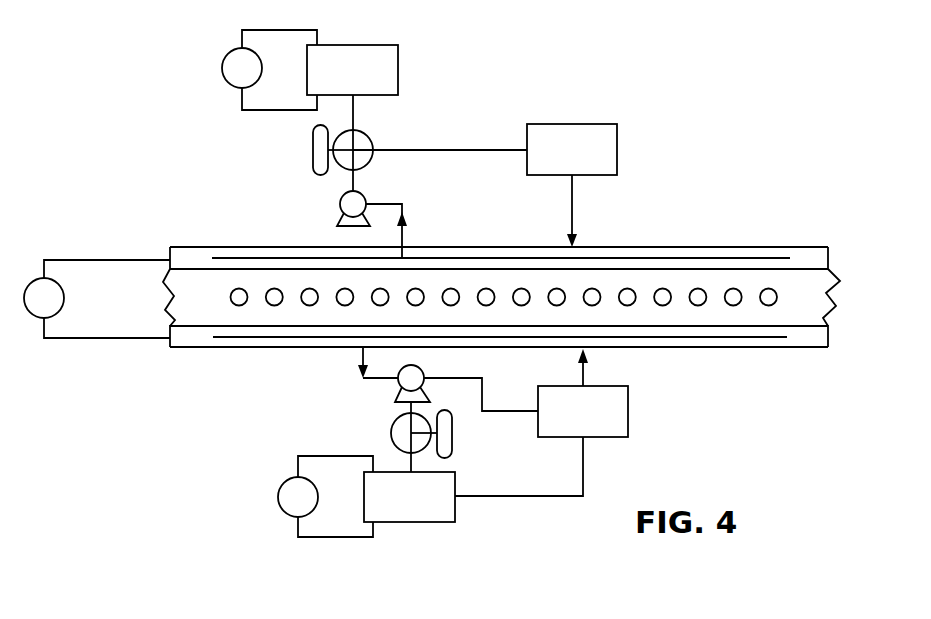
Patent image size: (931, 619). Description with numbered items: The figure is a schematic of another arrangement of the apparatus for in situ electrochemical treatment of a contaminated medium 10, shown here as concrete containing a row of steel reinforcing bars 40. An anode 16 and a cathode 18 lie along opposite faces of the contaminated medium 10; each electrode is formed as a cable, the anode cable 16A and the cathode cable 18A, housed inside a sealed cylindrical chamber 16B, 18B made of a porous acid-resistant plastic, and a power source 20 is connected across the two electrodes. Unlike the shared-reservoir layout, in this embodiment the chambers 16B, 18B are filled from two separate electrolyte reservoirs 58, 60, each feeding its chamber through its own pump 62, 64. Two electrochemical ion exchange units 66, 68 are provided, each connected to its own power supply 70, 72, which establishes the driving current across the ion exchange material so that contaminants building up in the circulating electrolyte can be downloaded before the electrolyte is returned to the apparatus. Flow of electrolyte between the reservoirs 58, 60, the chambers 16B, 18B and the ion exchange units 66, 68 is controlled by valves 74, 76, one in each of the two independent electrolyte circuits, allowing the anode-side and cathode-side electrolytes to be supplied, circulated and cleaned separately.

The contaminated medium 10 is at (808, 300).
The anode 16 is at (291, 348).
The anode cable 16A is at (223, 338).
The anode chamber 16B is at (345, 348).
The cathode 18 is at (632, 247).
The cathode cable 18A is at (755, 257).
The cathode chamber 18B is at (693, 246).
The power source 20 is at (30, 314).
The steel reinforcing bars 40 is at (633, 305).
The electrolyte reservoir 58 is at (580, 124).
The electrolyte reservoir 60 is at (628, 405).
The pump 62 is at (365, 195).
The pump 64 is at (422, 368).
The electrochemical ion exchange unit 66 is at (398, 73).
The electrochemical ion exchange unit 68 is at (440, 522).
The power supply 70 is at (222, 79).
The power supply 72 is at (278, 492).
The valve 74 is at (455, 435).
The valve 76 is at (371, 139).